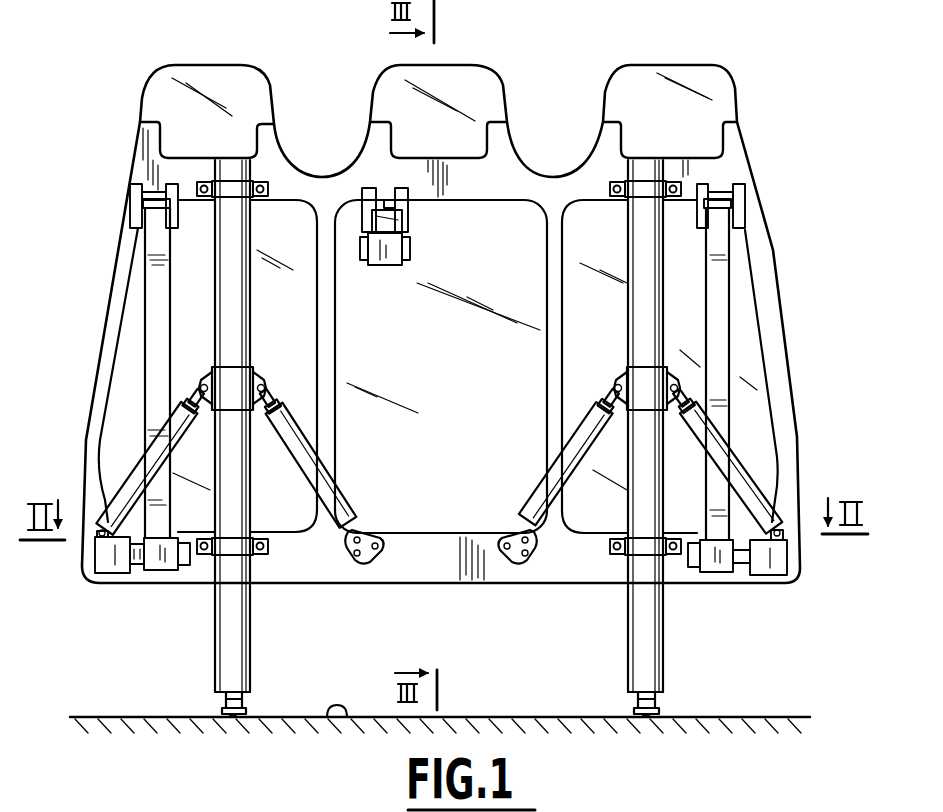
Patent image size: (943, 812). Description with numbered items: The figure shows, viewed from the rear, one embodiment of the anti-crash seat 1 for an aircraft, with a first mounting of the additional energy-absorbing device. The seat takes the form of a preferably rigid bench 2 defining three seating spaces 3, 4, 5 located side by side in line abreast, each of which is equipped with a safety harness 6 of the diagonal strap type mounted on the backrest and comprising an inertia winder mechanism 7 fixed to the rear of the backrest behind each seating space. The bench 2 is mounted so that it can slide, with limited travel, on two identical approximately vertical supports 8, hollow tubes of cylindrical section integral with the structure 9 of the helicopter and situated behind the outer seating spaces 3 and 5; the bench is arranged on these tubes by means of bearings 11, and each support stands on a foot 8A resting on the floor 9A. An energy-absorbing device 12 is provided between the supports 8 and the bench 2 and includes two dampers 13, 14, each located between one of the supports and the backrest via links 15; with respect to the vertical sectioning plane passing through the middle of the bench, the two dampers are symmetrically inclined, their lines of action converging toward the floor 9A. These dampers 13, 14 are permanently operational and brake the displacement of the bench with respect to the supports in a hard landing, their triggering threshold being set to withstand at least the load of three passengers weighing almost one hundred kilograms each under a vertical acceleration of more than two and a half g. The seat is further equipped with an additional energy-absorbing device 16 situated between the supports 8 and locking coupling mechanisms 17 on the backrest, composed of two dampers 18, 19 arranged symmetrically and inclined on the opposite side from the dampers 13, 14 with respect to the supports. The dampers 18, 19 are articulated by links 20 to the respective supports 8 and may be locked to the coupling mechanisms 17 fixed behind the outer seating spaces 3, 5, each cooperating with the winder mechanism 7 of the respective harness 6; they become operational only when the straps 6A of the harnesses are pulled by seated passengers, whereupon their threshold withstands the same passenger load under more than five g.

The anti-crash seat 1 is at (214, 46).
The bench 2 is at (371, 87).
The seating space 3 is at (263, 125).
The seating space 4 is at (488, 110).
The seating space 5 is at (727, 112).
The safety harness 6 is at (128, 237).
The strap 6A is at (152, 305).
The inertia winder mechanism 7 is at (158, 570).
The vertical support 8 is at (232, 671).
The post foot 8A is at (233, 717).
The structure 9 is at (123, 703).
The floor 9A is at (334, 719).
The bearing 11 is at (632, 197).
The energy-absorbing device 12 is at (488, 516).
The damper 13 is at (340, 477).
The damper 14 is at (560, 473).
The link 15 is at (263, 382).
The additional energy-absorbing device 16 is at (120, 470).
The coupling mechanism 17 is at (118, 573).
The damper 18 is at (143, 467).
The damper 19 is at (745, 482).
The link 20 is at (199, 385).